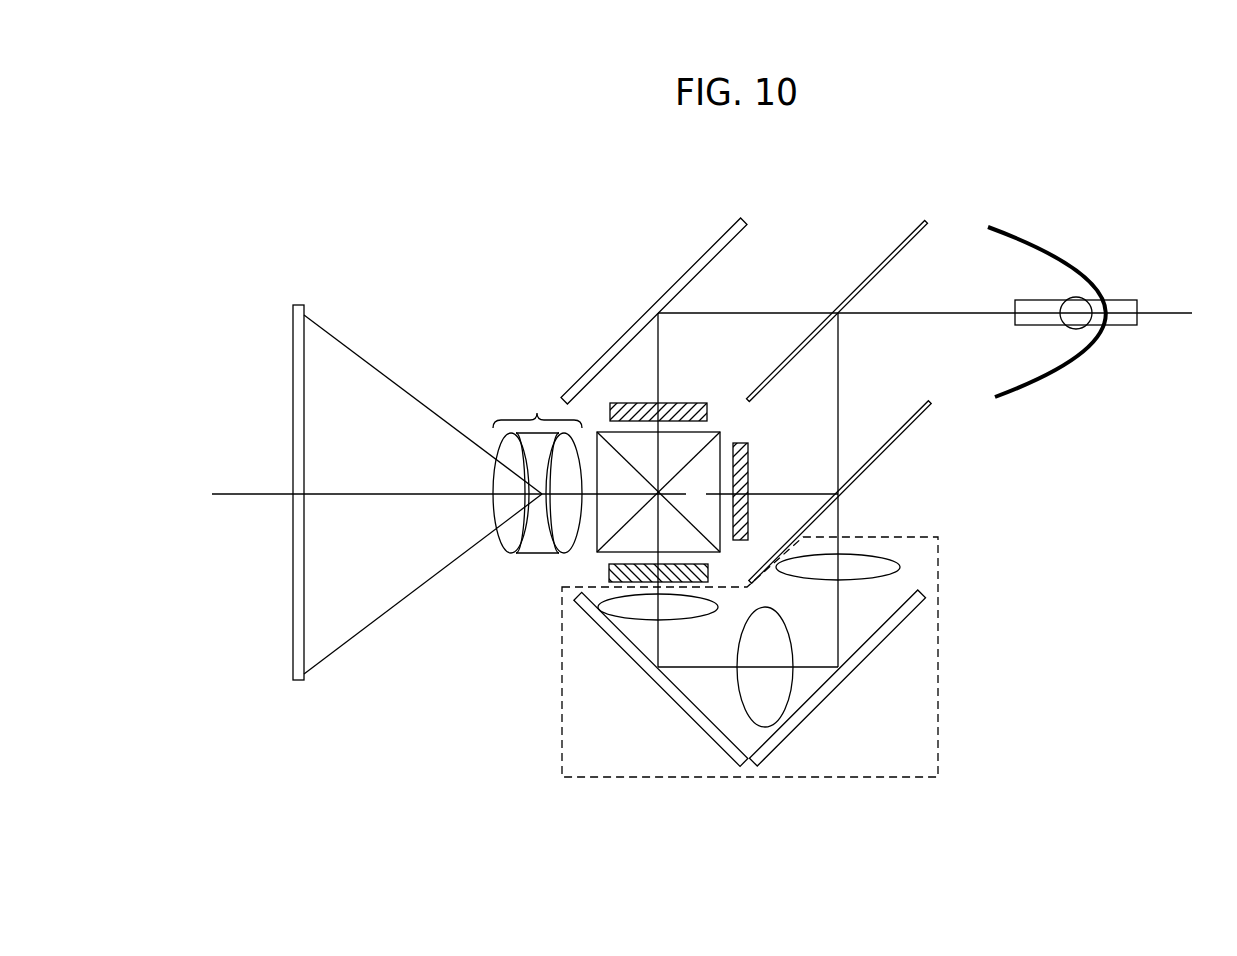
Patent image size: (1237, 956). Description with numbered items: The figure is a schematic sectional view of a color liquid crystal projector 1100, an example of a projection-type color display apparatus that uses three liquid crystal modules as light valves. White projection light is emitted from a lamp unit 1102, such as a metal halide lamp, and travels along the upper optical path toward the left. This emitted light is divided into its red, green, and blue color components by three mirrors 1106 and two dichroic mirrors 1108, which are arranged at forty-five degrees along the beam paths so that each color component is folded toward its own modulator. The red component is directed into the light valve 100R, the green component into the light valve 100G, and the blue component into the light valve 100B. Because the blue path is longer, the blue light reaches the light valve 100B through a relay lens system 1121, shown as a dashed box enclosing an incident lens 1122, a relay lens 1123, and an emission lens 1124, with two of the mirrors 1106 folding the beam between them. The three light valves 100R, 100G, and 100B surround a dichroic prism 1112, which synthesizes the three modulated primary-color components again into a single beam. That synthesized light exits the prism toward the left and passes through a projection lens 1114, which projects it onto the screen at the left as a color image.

The liquid crystal projector 1100 is at (990, 164).
The lamp unit 1102 is at (1077, 367).
The mirrors 1106 is at (692, 268).
The dichroic mirrors 1108 is at (873, 270).
The dichroic prism 1112 is at (608, 443).
The projection lens 1114 is at (537, 413).
The relay lens system 1121 is at (938, 748).
The incident lens 1122 is at (872, 562).
The relay lens 1123 is at (777, 702).
The emission lens 1124 is at (630, 608).
The light valve for R color components 100R is at (693, 410).
The light valve for G color components 100G is at (753, 480).
The light valve for B color components 100B is at (608, 568).